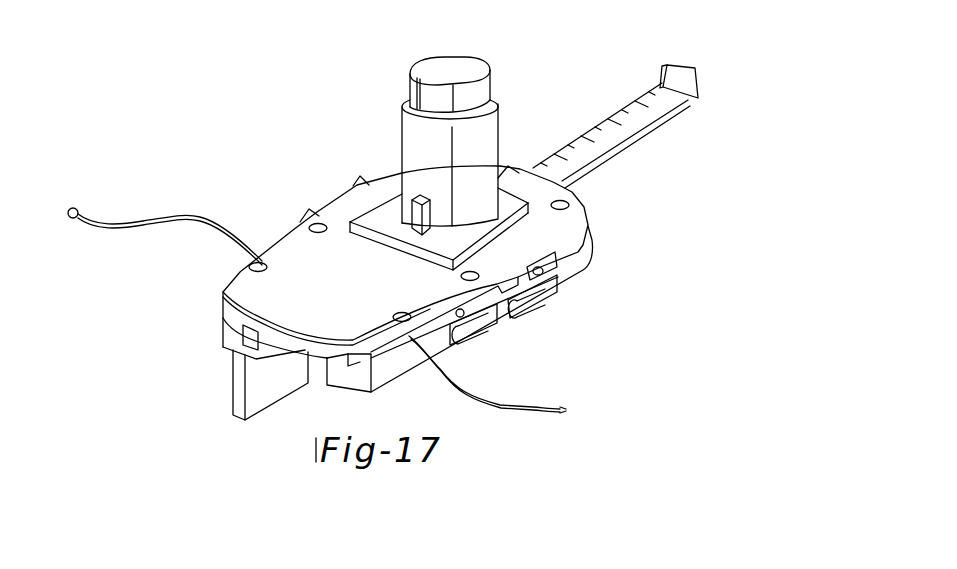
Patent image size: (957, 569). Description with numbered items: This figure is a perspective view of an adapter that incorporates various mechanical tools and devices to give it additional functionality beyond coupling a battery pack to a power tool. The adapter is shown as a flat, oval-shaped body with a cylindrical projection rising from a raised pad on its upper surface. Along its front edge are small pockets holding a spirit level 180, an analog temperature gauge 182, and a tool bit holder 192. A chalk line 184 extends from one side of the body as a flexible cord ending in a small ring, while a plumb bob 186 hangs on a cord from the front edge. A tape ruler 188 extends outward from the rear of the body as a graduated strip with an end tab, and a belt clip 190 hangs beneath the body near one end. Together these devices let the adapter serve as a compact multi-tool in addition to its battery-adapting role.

The spirit level 180 is at (473, 337).
The analog temperature gauge 182 is at (547, 265).
The chalk line 184 is at (142, 220).
The plumb bob 186 is at (530, 411).
The tape ruler 188 is at (703, 84).
The belt clip 190 is at (233, 377).
The tool bit holder 192 is at (497, 325).